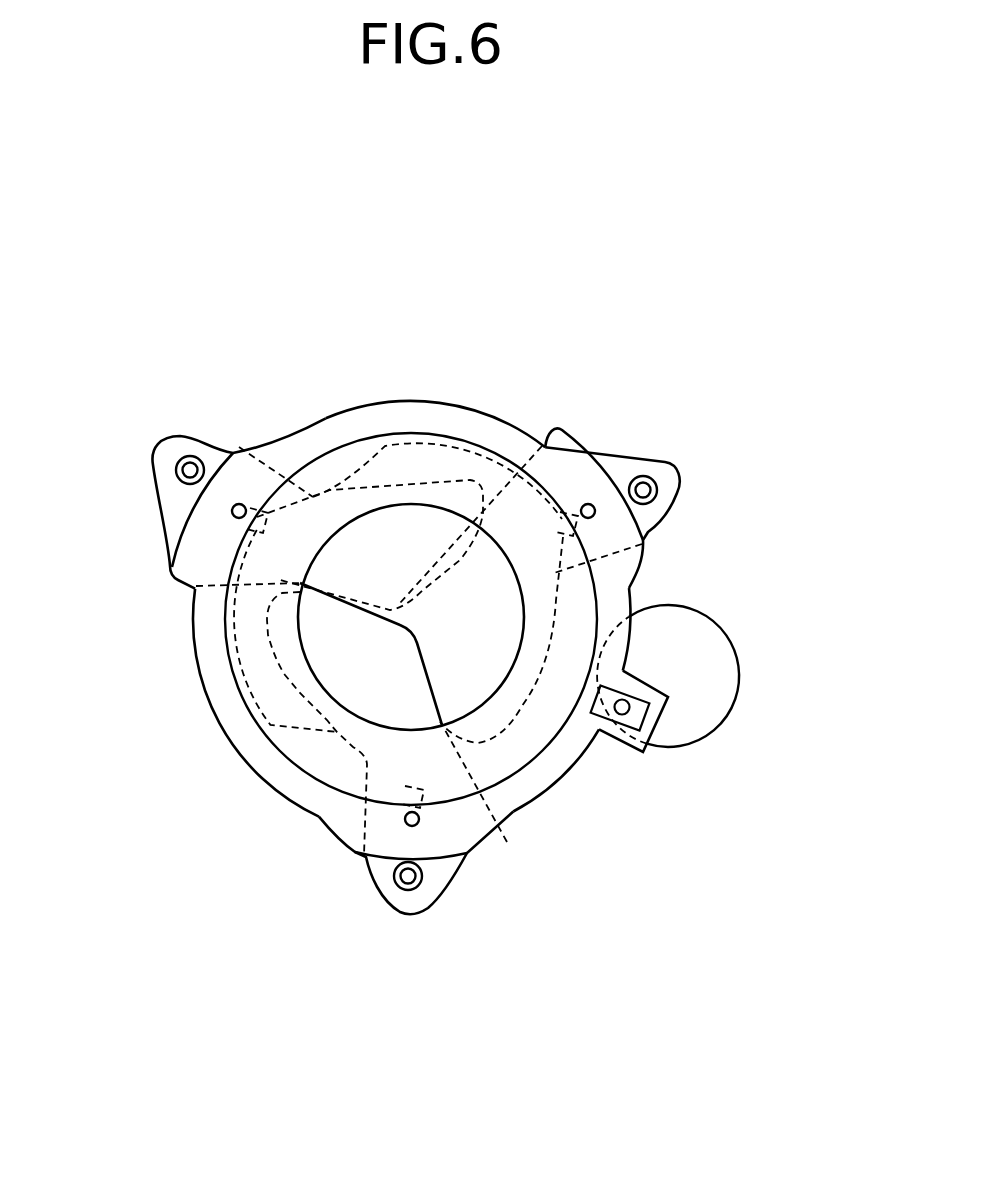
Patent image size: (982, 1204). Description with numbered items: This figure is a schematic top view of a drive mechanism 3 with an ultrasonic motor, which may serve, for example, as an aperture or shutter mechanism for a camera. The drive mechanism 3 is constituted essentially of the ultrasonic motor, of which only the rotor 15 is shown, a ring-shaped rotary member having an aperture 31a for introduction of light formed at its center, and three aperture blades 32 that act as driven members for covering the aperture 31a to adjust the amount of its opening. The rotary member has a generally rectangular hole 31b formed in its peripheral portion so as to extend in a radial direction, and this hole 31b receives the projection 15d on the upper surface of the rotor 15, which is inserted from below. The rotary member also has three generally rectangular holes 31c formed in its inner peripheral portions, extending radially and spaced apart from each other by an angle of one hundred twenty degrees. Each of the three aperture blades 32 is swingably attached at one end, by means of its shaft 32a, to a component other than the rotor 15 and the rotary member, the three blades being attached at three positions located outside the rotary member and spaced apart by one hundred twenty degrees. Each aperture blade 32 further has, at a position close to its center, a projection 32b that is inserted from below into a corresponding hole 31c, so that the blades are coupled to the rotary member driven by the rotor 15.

The drive mechanism 3 is at (795, 545).
The rotor 15 is at (716, 682).
The projection 15d is at (621, 716).
The aperture 31a is at (397, 556).
The hole 31b is at (630, 708).
The holes 31c is at (252, 524).
The aperture blades 32 is at (173, 498).
The shaft 32a is at (191, 457).
The projection 32b is at (241, 504).